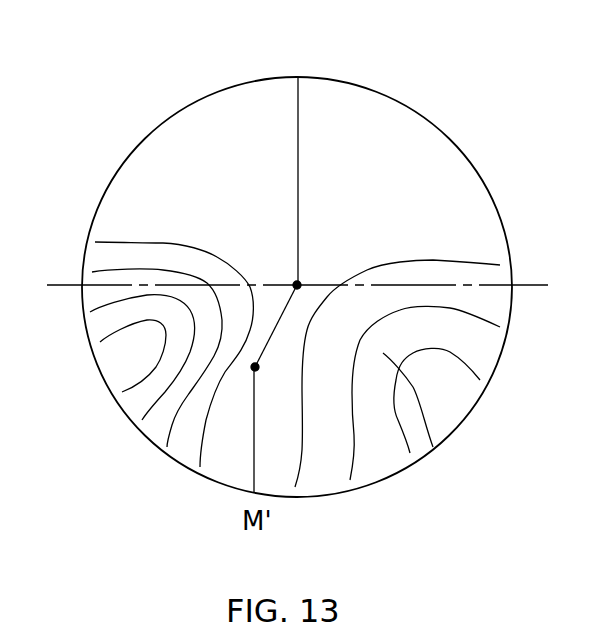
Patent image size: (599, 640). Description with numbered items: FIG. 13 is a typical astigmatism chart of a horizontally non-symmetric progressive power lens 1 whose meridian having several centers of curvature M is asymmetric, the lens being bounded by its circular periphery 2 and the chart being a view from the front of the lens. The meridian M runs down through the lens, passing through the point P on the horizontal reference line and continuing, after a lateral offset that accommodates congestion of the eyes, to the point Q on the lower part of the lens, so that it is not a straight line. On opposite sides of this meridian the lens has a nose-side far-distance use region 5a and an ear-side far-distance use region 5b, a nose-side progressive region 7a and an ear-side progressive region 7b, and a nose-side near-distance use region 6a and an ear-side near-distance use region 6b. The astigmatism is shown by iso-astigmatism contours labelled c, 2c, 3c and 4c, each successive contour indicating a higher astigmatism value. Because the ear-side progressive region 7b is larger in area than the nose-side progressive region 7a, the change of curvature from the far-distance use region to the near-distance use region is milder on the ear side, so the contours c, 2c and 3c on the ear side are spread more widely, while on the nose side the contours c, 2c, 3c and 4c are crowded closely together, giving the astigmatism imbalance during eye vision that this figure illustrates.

The spectacle lens 1 is at (482, 160).
The lens periphery / edge 2 is at (477, 218).
The meridian having several centers of curvature M is at (299, 160).
The distance reference point P is at (302, 283).
The near reference point Q is at (257, 368).
The nose-side far-distance use region 5a is at (183, 140).
The ear-side far-distance use region 5b is at (366, 128).
The astigmatism iso-line c is at (300, 356).
The astigmatism iso-line 2c is at (298, 364).
The astigmatism iso-line 3c is at (285, 374).
The astigmatism iso-line 4c is at (108, 356).
The nose-side progressive region 7a is at (183, 365).
The ear-side progressive region 7b is at (433, 447).
The nose-side near-distance use region 6a is at (224, 450).
The ear-side near-distance use region 6b is at (282, 447).